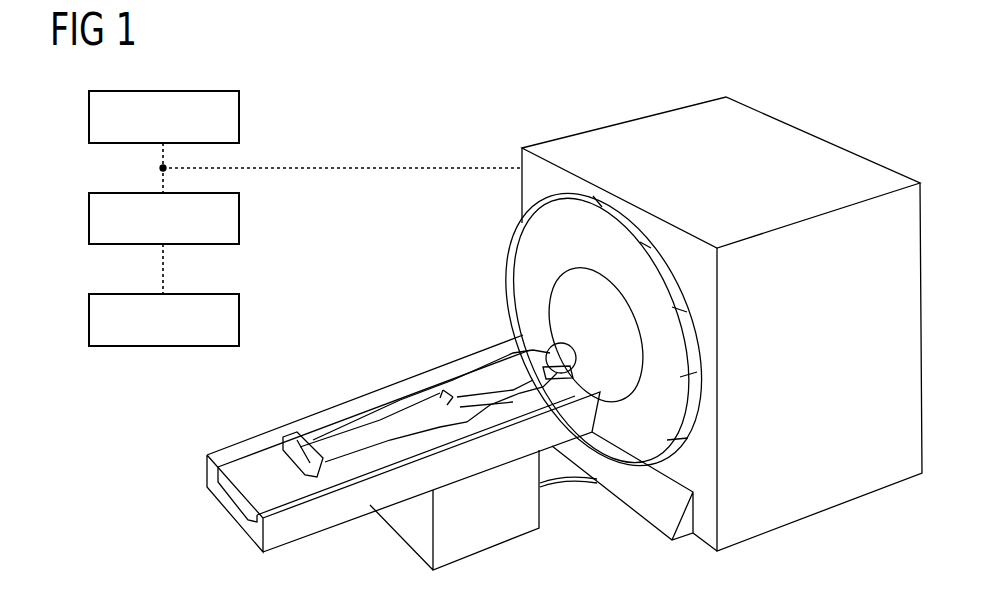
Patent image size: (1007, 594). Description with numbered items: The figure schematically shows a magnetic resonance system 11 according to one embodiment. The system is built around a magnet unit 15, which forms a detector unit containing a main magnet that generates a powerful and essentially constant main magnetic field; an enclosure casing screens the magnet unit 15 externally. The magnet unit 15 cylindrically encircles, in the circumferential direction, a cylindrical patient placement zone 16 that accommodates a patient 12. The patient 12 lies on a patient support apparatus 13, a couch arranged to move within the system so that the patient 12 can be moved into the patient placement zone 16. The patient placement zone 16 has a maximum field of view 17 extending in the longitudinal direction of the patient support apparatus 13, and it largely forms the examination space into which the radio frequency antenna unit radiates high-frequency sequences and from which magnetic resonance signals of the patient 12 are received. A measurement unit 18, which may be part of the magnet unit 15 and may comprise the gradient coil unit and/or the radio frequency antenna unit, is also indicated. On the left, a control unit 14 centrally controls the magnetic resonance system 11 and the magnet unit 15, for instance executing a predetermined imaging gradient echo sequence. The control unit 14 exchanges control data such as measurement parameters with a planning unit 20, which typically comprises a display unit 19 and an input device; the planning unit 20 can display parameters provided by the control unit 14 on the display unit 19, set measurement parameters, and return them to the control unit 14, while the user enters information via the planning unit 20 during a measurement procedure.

The magnetic resonance system 11 is at (674, 292).
The patient 12 is at (400, 403).
The patient support apparatus 13 is at (237, 450).
The control unit 14 is at (241, 117).
The magnet unit 15 is at (639, 131).
The patient placement zone 16 is at (575, 290).
The maximum field of view 17 is at (596, 334).
The measurement unit 18 is at (809, 493).
The display unit 19 is at (241, 321).
The planning unit 20 is at (241, 219).